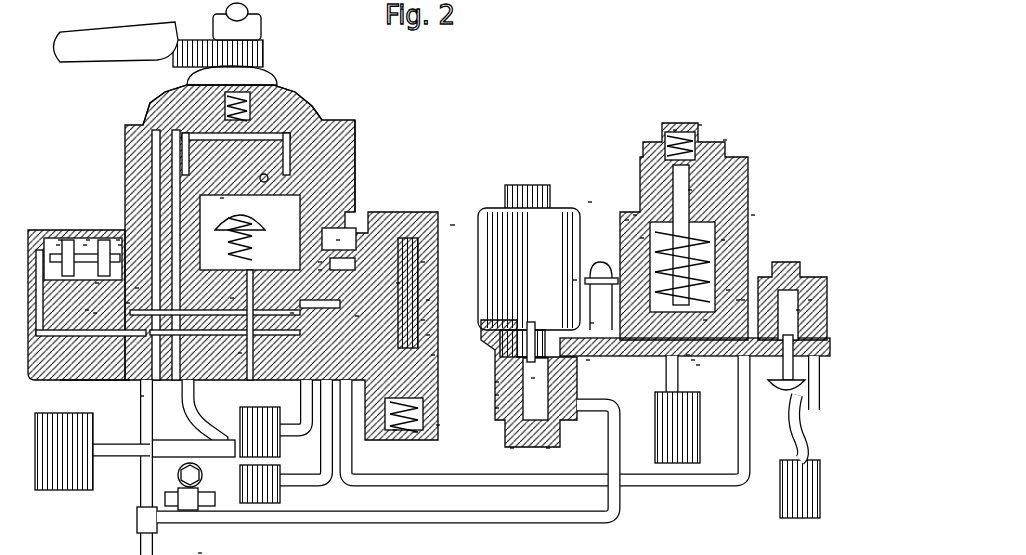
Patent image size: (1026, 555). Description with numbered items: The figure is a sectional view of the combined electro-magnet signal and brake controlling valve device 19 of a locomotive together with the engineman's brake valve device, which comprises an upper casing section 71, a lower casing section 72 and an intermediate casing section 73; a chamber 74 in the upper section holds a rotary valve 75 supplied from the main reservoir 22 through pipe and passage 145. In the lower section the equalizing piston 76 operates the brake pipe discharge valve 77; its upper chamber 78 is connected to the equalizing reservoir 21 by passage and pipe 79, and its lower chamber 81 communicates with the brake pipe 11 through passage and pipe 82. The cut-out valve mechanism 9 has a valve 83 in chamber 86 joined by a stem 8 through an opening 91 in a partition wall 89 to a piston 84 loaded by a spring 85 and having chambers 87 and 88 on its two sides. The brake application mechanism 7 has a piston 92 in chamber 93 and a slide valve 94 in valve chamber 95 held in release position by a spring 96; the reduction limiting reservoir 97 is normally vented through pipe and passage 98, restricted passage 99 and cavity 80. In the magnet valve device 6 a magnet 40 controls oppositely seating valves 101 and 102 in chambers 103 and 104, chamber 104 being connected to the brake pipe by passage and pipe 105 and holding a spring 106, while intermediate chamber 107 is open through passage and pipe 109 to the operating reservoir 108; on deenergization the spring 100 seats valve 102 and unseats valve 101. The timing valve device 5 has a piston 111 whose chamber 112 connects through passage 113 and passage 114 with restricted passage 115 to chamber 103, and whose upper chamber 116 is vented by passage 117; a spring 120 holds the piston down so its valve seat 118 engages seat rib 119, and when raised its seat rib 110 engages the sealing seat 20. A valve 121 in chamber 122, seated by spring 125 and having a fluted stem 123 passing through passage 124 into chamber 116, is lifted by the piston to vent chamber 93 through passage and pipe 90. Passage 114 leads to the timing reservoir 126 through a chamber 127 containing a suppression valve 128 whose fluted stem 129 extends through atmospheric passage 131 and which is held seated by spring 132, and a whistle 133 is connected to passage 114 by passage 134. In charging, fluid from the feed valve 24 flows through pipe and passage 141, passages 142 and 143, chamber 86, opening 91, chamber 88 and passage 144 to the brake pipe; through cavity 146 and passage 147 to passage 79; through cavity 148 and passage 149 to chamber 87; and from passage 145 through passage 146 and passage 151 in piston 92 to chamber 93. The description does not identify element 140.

The timing valve device 5 is at (655, 133).
The magnet valve device 6 is at (500, 208).
The brake application mechanism 7 is at (455, 225).
The stem 8 is at (85, 312).
The cut-out valve mechanism 9 is at (30, 230).
The brake pipe 11 is at (200, 553).
The combined electro-magnet signal and brake controlling valve device 19 is at (578, 199).
The sealing seat 20 is at (625, 222).
The equalizing reservoir 21 is at (250, 405).
The main reservoir 22 is at (70, 490).
The feed valve 24 is at (205, 470).
The magnet 40 is at (640, 240).
The upper casing section 71 is at (356, 128).
The lower casing section 72 is at (95, 380).
The intermediate casing section 73 is at (128, 178).
The chamber 74 is at (275, 100).
The rotary valve 75 is at (300, 112).
The equalizing piston 76 is at (340, 238).
The brake pipe discharge valve 77 is at (322, 262).
The chamber 78 is at (220, 200).
The passage and pipe 79 is at (330, 205).
The cavity 80 is at (430, 300).
The chamber 81 is at (230, 300).
The passage and pipe 82 is at (142, 398).
The valve 83 is at (118, 240).
The piston 84 is at (60, 240).
The spring 85 is at (58, 245).
The chamber 86 is at (120, 245).
The chamber 87 is at (95, 285).
The chamber 88 is at (85, 245).
The partition wall 89 is at (135, 290).
The passage and pipe 90 is at (748, 220).
The opening 91 is at (88, 240).
The piston 92 is at (440, 425).
The chamber 93 is at (395, 430).
The slide valve 94 is at (430, 335).
The valve chamber 95 is at (425, 262).
The spring 96 is at (415, 432).
The reduction limiting reservoir 97 is at (285, 495).
The pipe and passage 98 is at (330, 350).
The restricted passage 99 is at (355, 318).
The spring 100 is at (535, 378).
The valve 101 is at (497, 384).
The valve 102 is at (497, 410).
The chamber 103 is at (510, 335).
The chamber 104 is at (512, 448).
The passage and pipe 105 is at (495, 395).
The spring 106 is at (548, 448).
The chamber 107 is at (497, 397).
The operating reservoir 108 is at (700, 428).
The passage and pipe 109 is at (590, 360).
The seat rib 110 is at (640, 268).
The piston 111 is at (740, 300).
The chamber 112 is at (690, 355).
The passage 113 is at (695, 360).
The passage and pipe 114 is at (637, 345).
The restricted passage 115 is at (700, 365).
The chamber 116 is at (725, 240).
The passage 117 is at (635, 215).
The valve seat 118 is at (745, 300).
The seat rib 119 is at (705, 320).
The spring 120 is at (755, 215).
The valve 121 is at (700, 125).
The chamber 122 is at (725, 140).
The fluted stem 123 is at (692, 190).
The passage 124 is at (730, 290).
The spring 125 is at (675, 130).
The timing reservoir 126 is at (800, 520).
The chamber 127 is at (800, 310).
The suppression valve 128 is at (812, 300).
The fluted stem 129 is at (805, 440).
The passage 131 is at (785, 392).
The spring 132 is at (792, 301).
The whistle 133 is at (575, 282).
The passage 134 is at (590, 325).
The passage 140 is at (292, 315).
The pipe and passage 141 is at (238, 140).
The passage 142 is at (262, 182).
The passage 143 is at (128, 305).
The passage 144 is at (95, 315).
The pipe and passage 145 is at (150, 350).
The passage 146 is at (400, 283).
The passage 147 is at (322, 270).
The cavity 148 is at (425, 320).
The passage 149 is at (240, 355).
The passage 151 is at (435, 355).